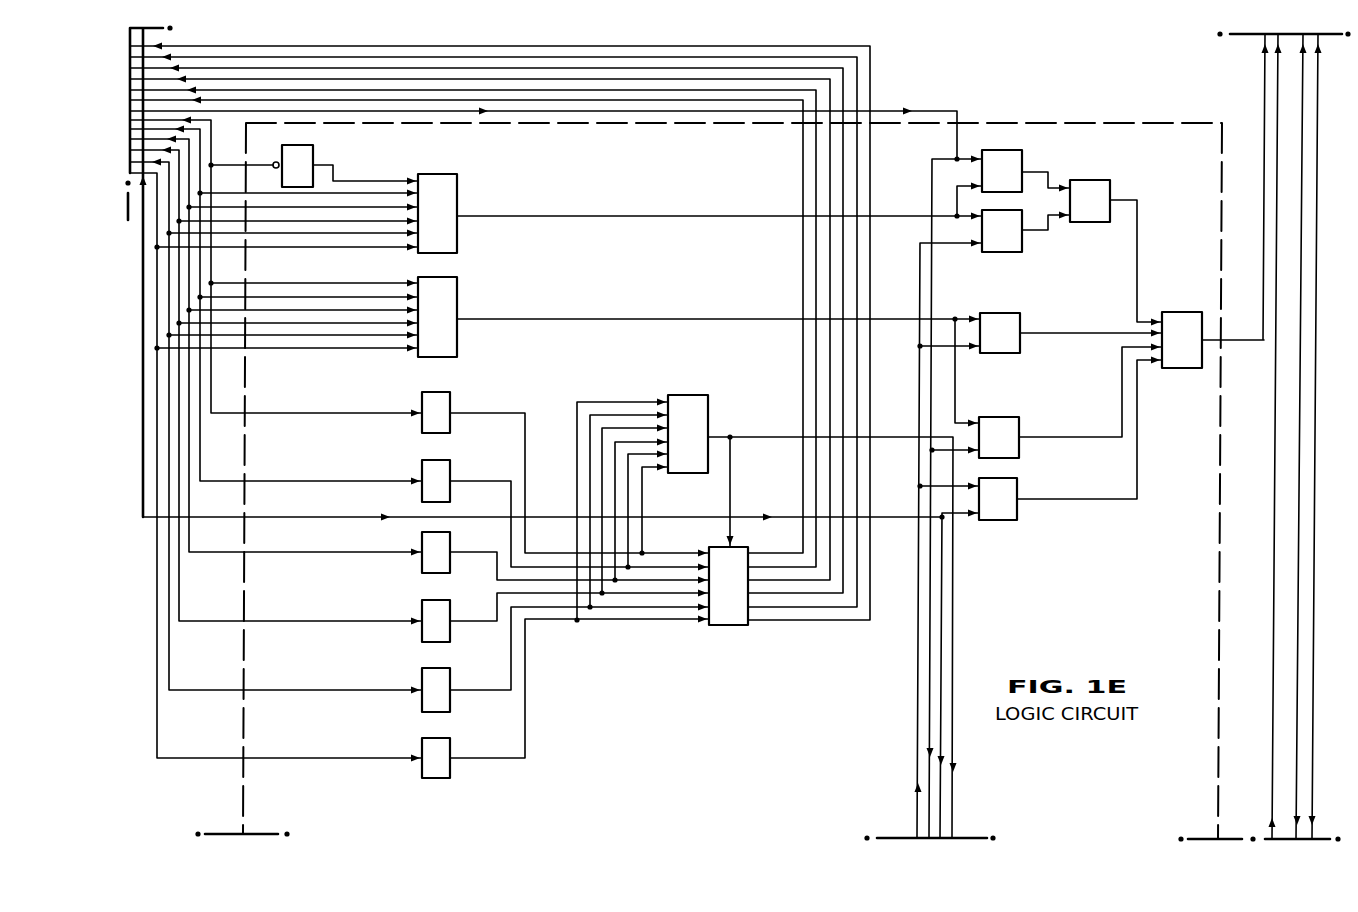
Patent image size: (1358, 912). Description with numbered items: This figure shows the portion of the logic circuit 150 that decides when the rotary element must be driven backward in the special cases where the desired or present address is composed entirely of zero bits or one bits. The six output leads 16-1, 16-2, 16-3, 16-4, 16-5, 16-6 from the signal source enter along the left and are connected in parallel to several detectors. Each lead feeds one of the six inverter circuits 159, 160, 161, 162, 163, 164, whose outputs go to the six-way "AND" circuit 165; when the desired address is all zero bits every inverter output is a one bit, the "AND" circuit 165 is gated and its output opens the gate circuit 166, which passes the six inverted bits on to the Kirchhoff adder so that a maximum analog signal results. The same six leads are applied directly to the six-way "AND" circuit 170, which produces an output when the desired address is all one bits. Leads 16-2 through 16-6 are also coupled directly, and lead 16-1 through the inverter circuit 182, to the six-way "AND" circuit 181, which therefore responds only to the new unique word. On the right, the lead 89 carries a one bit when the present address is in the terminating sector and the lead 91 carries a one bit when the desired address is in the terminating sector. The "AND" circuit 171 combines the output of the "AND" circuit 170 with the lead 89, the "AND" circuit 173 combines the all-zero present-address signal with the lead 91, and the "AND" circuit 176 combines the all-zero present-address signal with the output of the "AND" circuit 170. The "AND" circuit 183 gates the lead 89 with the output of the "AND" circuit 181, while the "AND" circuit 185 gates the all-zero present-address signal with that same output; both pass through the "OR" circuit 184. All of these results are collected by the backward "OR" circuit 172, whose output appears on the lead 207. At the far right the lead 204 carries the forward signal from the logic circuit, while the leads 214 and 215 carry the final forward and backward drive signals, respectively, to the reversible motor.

The lead 89 is at (237, 108).
The lead 91 is at (150, 519).
The logic circuit 150 is at (1138, 123).
The inverter circuit 159 is at (450, 397).
The inverter circuit 160 is at (450, 465).
The inverter circuit 161 is at (450, 537).
The inverter circuit 162 is at (450, 605).
The inverter circuit 163 is at (450, 673).
The inverter circuit 164 is at (450, 743).
The six-way "AND" circuit 165 is at (709, 405).
The gate circuit 166 is at (733, 625).
The six-way "AND" circuit 170 is at (458, 291).
The "AND" circuit 171 is at (1019, 422).
The backward "OR" circuit 172 is at (1175, 317).
The "AND" circuit 173 is at (1017, 483).
The "AND" circuit 176 is at (1020, 318).
The six-way "AND" circuit 181 is at (458, 187).
The inverter circuit 182 is at (313, 152).
The "AND" circuit 183 is at (1022, 155).
The "OR" circuit 184 is at (1110, 189).
The "AND" circuit 185 is at (1022, 247).
The lead 204 is at (1277, 62).
The lead 207 is at (1264, 80).
The lead 214 is at (1319, 55).
The lead 215 is at (1303, 90).
The output lead 16-1 is at (460, 47).
The output lead 16-2 is at (537, 60).
The output lead 16-3 is at (583, 70).
The output lead 16-4 is at (626, 83).
The output lead 16-5 is at (670, 92).
The output lead 16-6 is at (725, 102).